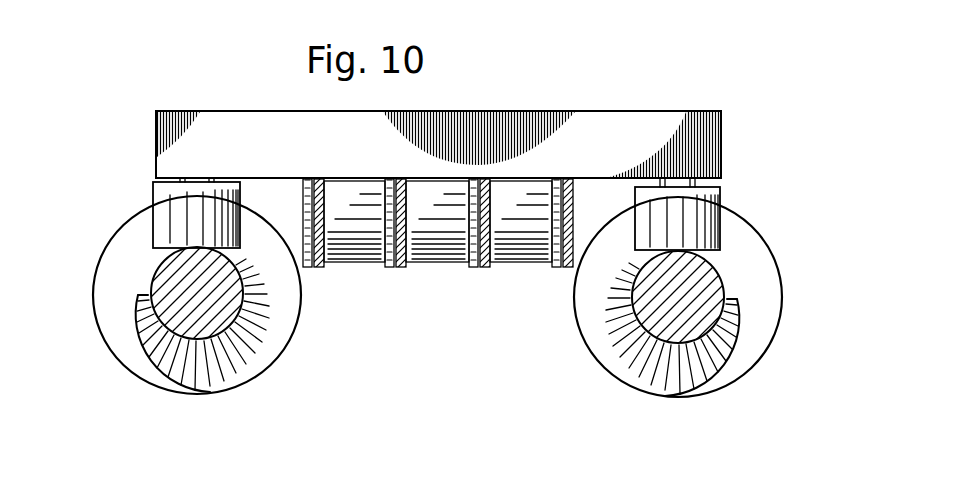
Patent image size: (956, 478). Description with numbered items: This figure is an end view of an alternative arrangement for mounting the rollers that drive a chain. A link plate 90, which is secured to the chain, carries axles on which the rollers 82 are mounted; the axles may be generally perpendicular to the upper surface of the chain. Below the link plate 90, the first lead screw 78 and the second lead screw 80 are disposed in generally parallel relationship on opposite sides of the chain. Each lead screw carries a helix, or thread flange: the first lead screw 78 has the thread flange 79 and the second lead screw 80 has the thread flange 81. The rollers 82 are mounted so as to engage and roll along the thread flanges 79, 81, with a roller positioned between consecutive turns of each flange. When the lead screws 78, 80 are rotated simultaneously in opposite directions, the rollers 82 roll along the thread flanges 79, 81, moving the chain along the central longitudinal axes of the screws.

The link plate 90 is at (640, 111).
The rollers 82 is at (165, 195).
The first lead screw 78 is at (103, 340).
The thread flange 79 is at (115, 282).
The second lead screw 80 is at (785, 292).
The thread flange 81 is at (760, 258).